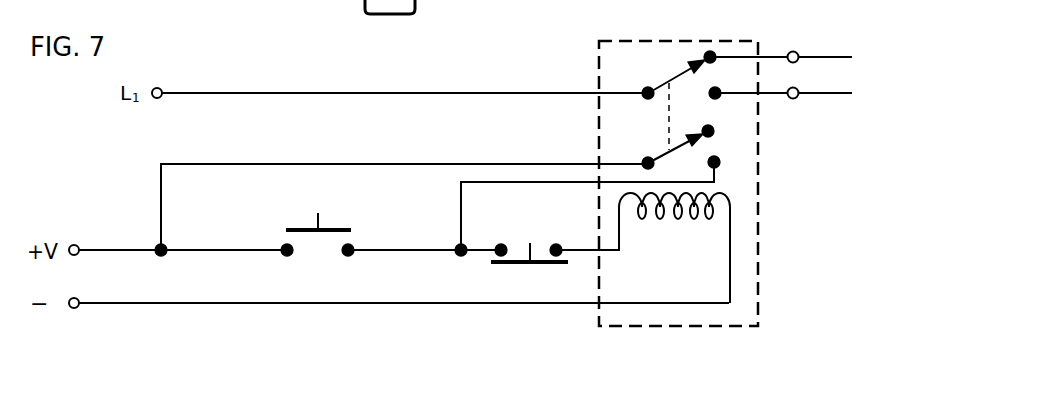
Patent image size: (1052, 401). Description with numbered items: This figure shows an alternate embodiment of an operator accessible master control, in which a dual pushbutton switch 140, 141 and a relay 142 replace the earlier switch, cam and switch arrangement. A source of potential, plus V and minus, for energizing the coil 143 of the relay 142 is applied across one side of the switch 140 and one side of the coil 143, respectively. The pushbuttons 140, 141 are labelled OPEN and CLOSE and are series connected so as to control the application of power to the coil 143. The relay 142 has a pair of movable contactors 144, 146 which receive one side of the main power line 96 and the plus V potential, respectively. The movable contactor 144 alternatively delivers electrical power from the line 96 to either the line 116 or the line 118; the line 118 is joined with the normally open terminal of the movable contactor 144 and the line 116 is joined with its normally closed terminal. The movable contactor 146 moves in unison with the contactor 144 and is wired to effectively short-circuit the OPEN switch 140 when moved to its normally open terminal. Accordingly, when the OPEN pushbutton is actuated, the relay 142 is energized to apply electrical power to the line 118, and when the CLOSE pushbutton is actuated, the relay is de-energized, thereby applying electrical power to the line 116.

The main power line 96 is at (232, 95).
The line 116 is at (841, 56).
The line 118 is at (830, 96).
The OPEN pushbutton switch 140 is at (358, 234).
The CLOSE pushbutton switch 141 is at (520, 267).
The relay 142 is at (628, 327).
The coil 143 is at (659, 220).
The movable contactor 144 is at (657, 62).
The movable contactor 146 is at (658, 153).